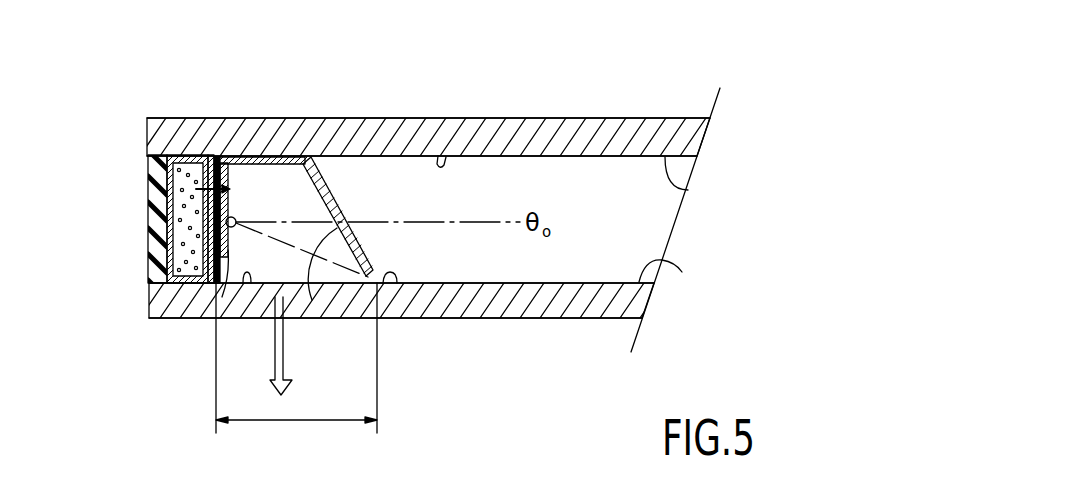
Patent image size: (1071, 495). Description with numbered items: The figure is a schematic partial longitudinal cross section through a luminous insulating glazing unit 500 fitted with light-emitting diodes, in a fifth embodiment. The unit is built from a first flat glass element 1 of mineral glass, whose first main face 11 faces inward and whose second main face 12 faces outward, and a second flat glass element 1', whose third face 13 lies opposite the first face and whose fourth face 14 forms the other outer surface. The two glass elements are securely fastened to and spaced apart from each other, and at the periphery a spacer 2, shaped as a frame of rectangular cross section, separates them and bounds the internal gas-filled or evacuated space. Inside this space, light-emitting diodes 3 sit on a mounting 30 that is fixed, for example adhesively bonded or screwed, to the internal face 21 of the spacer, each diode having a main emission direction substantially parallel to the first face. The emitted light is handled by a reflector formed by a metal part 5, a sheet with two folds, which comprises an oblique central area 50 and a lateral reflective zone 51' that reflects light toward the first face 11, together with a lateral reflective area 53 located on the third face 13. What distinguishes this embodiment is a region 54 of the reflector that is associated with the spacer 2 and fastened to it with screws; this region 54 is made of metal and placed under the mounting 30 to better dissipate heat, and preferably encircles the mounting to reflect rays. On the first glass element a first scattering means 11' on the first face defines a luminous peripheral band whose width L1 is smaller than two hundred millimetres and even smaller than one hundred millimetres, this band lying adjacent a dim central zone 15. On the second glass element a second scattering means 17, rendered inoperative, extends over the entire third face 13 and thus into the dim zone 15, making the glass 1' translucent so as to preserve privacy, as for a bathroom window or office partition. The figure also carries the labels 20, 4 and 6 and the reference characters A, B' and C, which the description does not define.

The luminous insulating glazing unit 500 is at (680, 78).
The first flat glass element 1 is at (402, 330).
The second flat glass element 1' is at (423, 102).
The first main face 11 is at (677, 273).
The first scattering means 11' is at (249, 326).
The second main face 12 is at (555, 318).
The third face 13 is at (690, 190).
The fourth face 14 is at (626, 117).
The dim central zone 15 is at (510, 157).
The second scattering means 17 is at (438, 156).
The cavity between substrates 20 is at (565, 193).
The spacer 2 is at (183, 209).
The light-emitting diodes 3 is at (237, 216).
The end wall 4 is at (158, 175).
The metal part of the reflector 5 is at (334, 188).
The light emission direction arrow 6 is at (227, 186).
The internal face of the spacer 21 is at (216, 292).
The mounting 30 is at (212, 233).
The oblique central area 50 is at (312, 300).
The lateral reflective zone 51' is at (337, 250).
The lateral reflective area 53 is at (274, 158).
The fastening region of the reflector 54 is at (206, 224).
The point A is at (365, 277).
The point B' is at (202, 214).
The point C is at (397, 283).
The width of the first luminous zones L1 is at (296, 367).